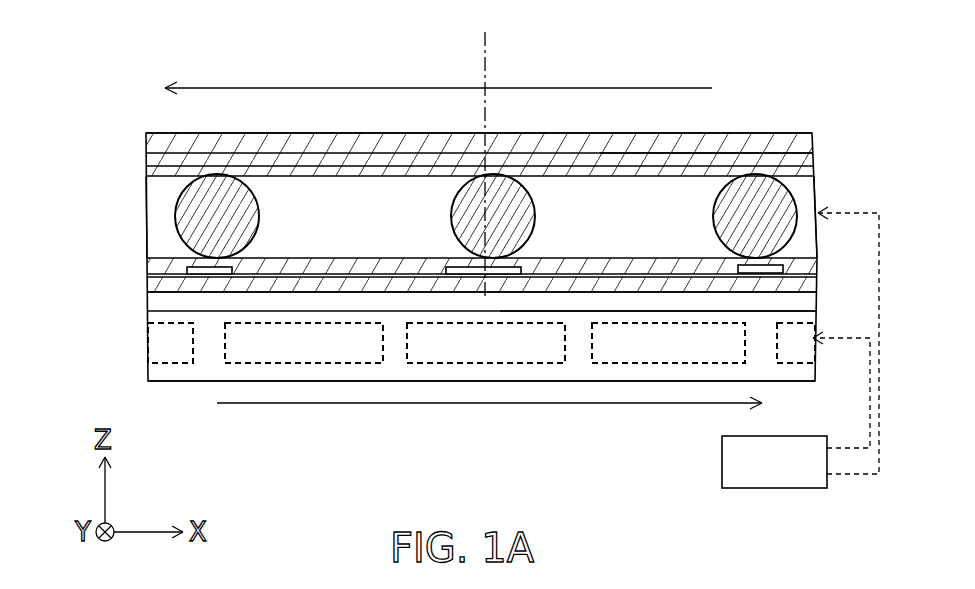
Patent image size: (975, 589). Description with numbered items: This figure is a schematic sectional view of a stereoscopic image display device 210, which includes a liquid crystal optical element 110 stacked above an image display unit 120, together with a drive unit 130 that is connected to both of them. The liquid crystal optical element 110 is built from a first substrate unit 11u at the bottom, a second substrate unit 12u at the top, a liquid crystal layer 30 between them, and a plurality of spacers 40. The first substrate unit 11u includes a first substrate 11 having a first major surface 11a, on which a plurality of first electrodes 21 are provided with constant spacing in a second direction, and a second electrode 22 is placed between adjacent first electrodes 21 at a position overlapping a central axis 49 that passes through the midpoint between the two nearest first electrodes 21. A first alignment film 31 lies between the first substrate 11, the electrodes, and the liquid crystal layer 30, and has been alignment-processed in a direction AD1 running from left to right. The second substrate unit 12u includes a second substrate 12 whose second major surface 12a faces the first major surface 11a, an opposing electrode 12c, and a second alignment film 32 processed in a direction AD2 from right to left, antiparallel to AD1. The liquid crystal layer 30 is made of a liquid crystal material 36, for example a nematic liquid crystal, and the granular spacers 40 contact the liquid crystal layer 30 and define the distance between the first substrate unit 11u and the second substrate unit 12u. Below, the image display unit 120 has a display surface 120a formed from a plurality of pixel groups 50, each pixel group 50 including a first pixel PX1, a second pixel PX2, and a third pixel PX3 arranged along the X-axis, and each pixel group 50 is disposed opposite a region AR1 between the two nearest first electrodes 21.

The stereoscopic image display device 210 is at (627, 73).
The liquid crystal optical element 110 is at (742, 131).
The second substrate 12 is at (168, 147).
The second major surface 12a is at (797, 155).
The opposing electrode 12c is at (170, 160).
The second substrate unit 12u is at (95, 92).
The second alignment film 32 is at (170, 171).
The liquid crystal material 36 is at (163, 188).
The liquid crystal layer 30 is at (148, 212).
The spacers 40 is at (225, 208).
The second electrode 22 is at (445, 260).
The first electrodes 21 is at (190, 268).
The first major surface 11a is at (798, 272).
The first alignment film 31 is at (152, 290).
The first substrate 11 is at (150, 304).
The first substrate unit 11u is at (95, 238).
The display surface 120a is at (786, 311).
The image display unit 120 is at (182, 382).
The drive unit 130 is at (792, 460).
The pixel group 50 is at (655, 450).
The central axis 49 is at (482, 68).
The first pixel PX1 is at (345, 364).
The second pixel PX2 is at (482, 364).
The third pixel PX3 is at (608, 364).
The region AR1 is at (553, 258).
The direction of alignment processing AD1 is at (674, 405).
The direction of alignment processing AD2 is at (383, 88).